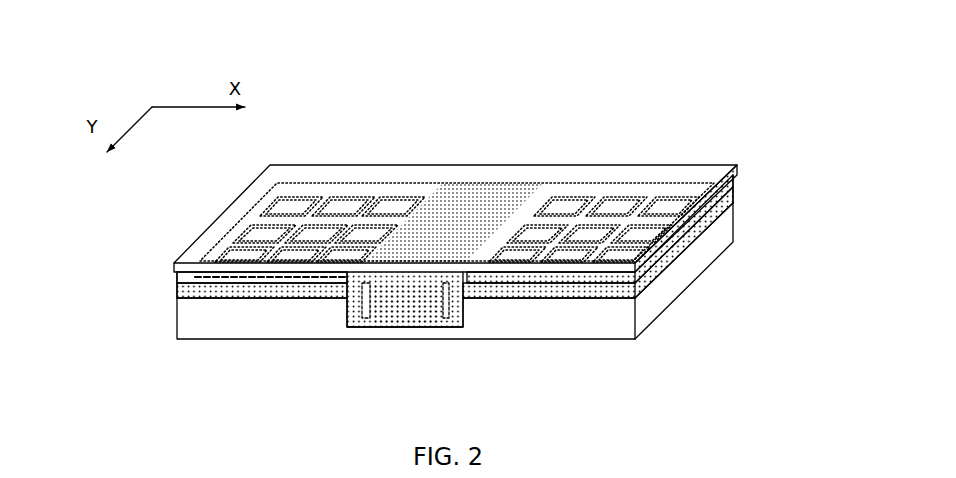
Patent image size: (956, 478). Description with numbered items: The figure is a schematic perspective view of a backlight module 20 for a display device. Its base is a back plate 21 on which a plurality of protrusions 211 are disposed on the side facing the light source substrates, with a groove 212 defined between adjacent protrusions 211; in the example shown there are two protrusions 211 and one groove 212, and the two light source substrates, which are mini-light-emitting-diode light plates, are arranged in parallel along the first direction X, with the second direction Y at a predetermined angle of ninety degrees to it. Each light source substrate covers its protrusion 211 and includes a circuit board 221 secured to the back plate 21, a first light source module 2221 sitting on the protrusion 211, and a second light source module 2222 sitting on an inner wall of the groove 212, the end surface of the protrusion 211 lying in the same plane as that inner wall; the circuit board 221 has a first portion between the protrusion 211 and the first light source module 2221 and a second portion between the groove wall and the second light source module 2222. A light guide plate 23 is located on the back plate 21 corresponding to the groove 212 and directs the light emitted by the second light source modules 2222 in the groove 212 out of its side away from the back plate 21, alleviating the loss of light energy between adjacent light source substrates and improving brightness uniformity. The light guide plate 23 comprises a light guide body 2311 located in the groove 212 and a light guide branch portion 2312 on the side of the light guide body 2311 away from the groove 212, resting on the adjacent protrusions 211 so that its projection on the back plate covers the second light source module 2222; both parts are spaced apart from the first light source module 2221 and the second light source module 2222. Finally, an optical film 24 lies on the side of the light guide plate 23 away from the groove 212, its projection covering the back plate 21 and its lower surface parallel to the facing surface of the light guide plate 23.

The backlight module 20 is at (125, 49).
The back plate 21 is at (645, 305).
The protrusion 211 is at (268, 299).
The groove 212 is at (446, 329).
The circuit board 221 is at (670, 253).
The first light source module 2221 is at (194, 278).
The second light source module 2222 is at (377, 314).
The light guide plate 23 is at (442, 341).
The light guide body 2311 is at (436, 310).
The light guide branch portion 2312 is at (471, 278).
The optical film 24 is at (173, 270).